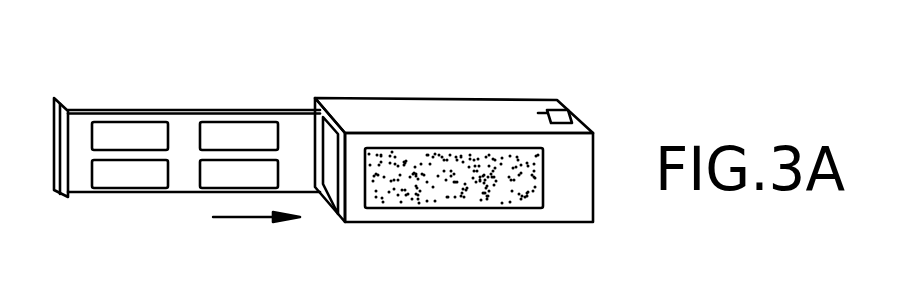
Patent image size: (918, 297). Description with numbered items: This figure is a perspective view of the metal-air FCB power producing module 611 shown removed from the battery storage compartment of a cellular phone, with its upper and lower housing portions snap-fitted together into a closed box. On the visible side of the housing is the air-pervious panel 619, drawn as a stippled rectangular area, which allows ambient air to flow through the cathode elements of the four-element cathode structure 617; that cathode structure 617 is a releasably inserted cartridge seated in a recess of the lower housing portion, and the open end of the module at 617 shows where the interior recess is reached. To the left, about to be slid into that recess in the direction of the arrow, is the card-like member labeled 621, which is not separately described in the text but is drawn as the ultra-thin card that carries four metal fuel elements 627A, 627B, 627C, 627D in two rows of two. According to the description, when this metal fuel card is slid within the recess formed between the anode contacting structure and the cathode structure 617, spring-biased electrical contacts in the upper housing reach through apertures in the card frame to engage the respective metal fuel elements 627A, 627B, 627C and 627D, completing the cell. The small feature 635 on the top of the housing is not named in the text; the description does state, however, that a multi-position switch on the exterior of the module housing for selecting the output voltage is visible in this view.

The FCB power producing module 611 is at (423, 107).
The cathode structure 617 is at (316, 194).
The air-pervious panel 619 is at (445, 190).
The slider body 621 is at (192, 108).
The metal fuel element 627A is at (132, 180).
The metal fuel element 627B is at (128, 130).
The metal fuel element 627C is at (245, 132).
The metal fuel element 627D is at (215, 183).
The slot 635 is at (552, 112).